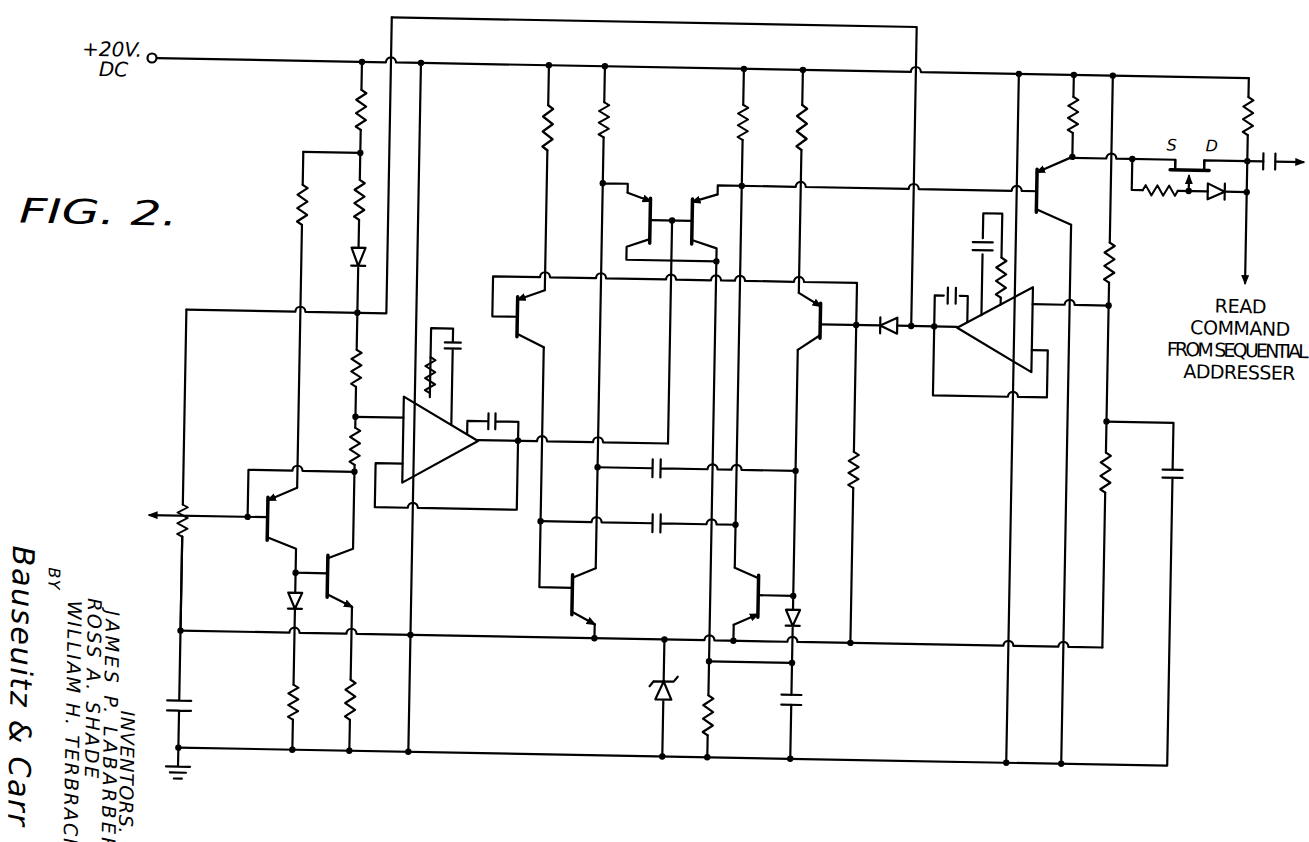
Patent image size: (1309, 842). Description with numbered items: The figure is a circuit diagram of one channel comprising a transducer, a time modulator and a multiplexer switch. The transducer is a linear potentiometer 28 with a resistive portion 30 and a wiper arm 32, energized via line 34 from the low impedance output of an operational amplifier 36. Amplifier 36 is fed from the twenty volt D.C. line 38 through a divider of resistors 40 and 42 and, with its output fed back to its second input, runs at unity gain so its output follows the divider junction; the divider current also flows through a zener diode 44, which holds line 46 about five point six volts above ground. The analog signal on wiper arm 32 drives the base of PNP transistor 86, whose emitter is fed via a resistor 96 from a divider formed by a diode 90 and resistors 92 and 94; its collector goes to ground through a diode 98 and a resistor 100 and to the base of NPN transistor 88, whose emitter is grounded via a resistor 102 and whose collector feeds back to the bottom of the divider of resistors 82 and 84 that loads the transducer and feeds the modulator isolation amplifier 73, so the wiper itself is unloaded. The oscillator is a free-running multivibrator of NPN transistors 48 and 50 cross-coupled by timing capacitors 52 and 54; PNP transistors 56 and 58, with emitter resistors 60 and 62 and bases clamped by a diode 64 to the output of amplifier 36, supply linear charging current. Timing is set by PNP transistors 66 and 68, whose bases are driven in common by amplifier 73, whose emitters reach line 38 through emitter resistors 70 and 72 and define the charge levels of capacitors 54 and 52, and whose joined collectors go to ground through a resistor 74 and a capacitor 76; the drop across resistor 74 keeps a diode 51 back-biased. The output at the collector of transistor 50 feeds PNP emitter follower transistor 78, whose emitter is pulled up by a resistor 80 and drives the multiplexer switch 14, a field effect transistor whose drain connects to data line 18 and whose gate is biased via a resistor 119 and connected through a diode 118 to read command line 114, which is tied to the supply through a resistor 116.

The multiplexer switch 14 is at (1194, 143).
The data line 18 is at (1282, 154).
The linear potentiometer 28 is at (176, 502).
The resistive portion 30 is at (195, 508).
The wiper arm 32 is at (196, 530).
The line 34 is at (225, 306).
The operational amplifier 36 is at (976, 354).
The line 38 is at (950, 62).
The resistor 40 is at (1117, 244).
The resistor 42 is at (1117, 453).
The zener diode 44 is at (664, 698).
The line 46 is at (891, 636).
The NPN transistor 48 is at (577, 598).
The NPN transistor 50 is at (773, 564).
The diode 51 is at (811, 606).
The timing capacitor 52 is at (656, 512).
The timing capacitor 54 is at (665, 476).
The PNP transistor 56 is at (518, 320).
The PNP transistor 58 is at (824, 330).
The resistor 60 is at (543, 124).
The resistor 62 is at (809, 116).
The diode 64 is at (890, 306).
The PNP transistor 66 is at (655, 192).
The PNP transistor 68 is at (692, 192).
The emitter resistor 70 is at (610, 112).
The emitter resistor 72 is at (739, 119).
The modulator isolation amplifier 73 is at (442, 478).
The resistor 74 is at (727, 708).
The capacitor 76 is at (814, 700).
The PNP transistor 78 is at (1036, 154).
The resistor 80 is at (1069, 96).
The resistor 82 is at (356, 365).
The resistor 84 is at (356, 449).
The PNP transistor 86 is at (270, 538).
The NPN transistor 88 is at (335, 569).
The diode 90 is at (353, 262).
The resistor 92 is at (356, 193).
The resistor 94 is at (356, 106).
The resistor 96 is at (300, 194).
The diode 98 is at (297, 600).
The resistor 100 is at (300, 694).
The resistor 102 is at (354, 690).
The read command line 114 is at (1250, 223).
The resistor 116 is at (1245, 92).
The diode 118 is at (1223, 182).
The resistor 119 is at (1162, 182).